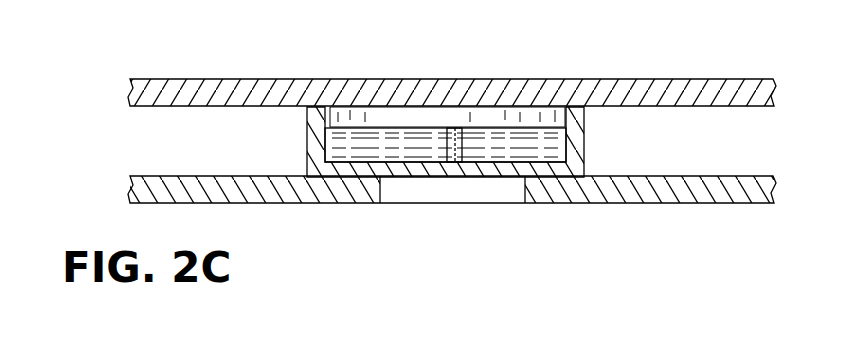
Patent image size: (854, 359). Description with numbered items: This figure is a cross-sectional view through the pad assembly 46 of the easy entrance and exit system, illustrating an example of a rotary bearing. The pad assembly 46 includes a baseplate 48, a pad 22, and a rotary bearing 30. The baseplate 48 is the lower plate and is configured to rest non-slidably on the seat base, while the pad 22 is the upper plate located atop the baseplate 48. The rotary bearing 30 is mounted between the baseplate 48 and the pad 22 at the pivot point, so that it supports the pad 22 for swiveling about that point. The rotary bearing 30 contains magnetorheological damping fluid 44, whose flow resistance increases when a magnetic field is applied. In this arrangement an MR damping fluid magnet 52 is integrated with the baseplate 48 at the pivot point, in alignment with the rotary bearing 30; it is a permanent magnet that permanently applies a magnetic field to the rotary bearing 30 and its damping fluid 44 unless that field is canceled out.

The pad assembly 46 is at (96, 88).
The pad 22 is at (277, 78).
The rotary bearing 30 is at (307, 135).
The magnetorheological damping fluid 44 is at (523, 145).
The MR damping fluid magnet 52 is at (455, 204).
The baseplate 48 is at (590, 204).